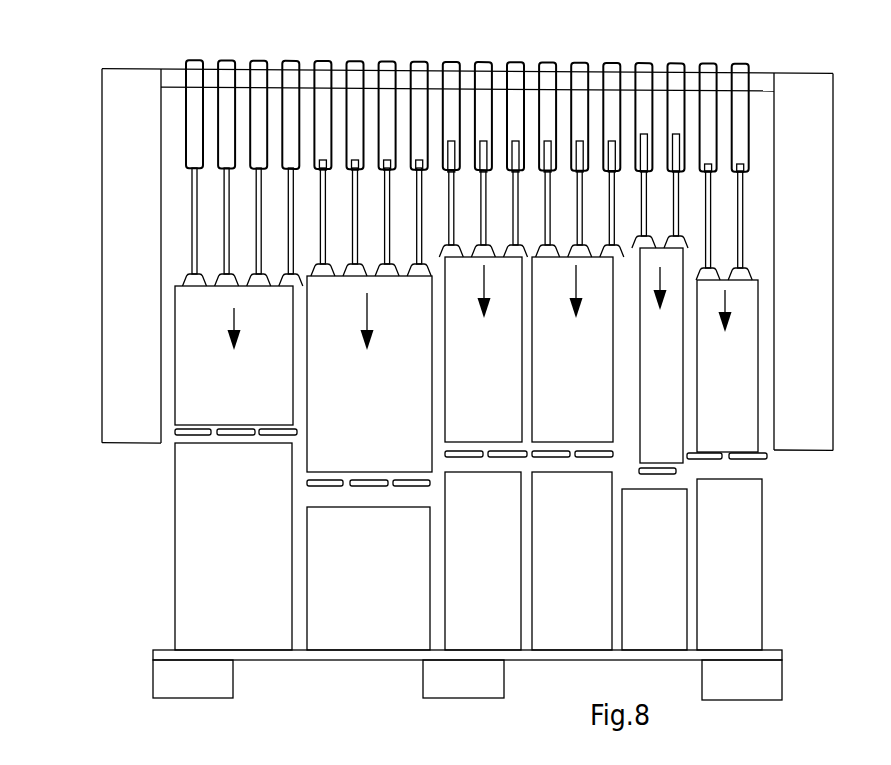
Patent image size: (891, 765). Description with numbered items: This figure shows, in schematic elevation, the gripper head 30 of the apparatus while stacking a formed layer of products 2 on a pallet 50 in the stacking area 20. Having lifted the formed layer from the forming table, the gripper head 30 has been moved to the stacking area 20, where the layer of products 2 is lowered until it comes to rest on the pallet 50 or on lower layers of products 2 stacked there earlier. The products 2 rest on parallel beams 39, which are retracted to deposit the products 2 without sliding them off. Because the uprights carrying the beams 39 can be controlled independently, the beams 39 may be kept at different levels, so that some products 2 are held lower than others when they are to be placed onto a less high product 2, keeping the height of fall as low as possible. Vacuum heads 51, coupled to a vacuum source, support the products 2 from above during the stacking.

The product 2 is at (753, 515).
The stacking area 20 is at (528, 449).
The gripper head 30 is at (825, 264).
The beam 39 is at (278, 428).
The pallet 50 is at (762, 681).
The vacuum head 51 is at (486, 68).